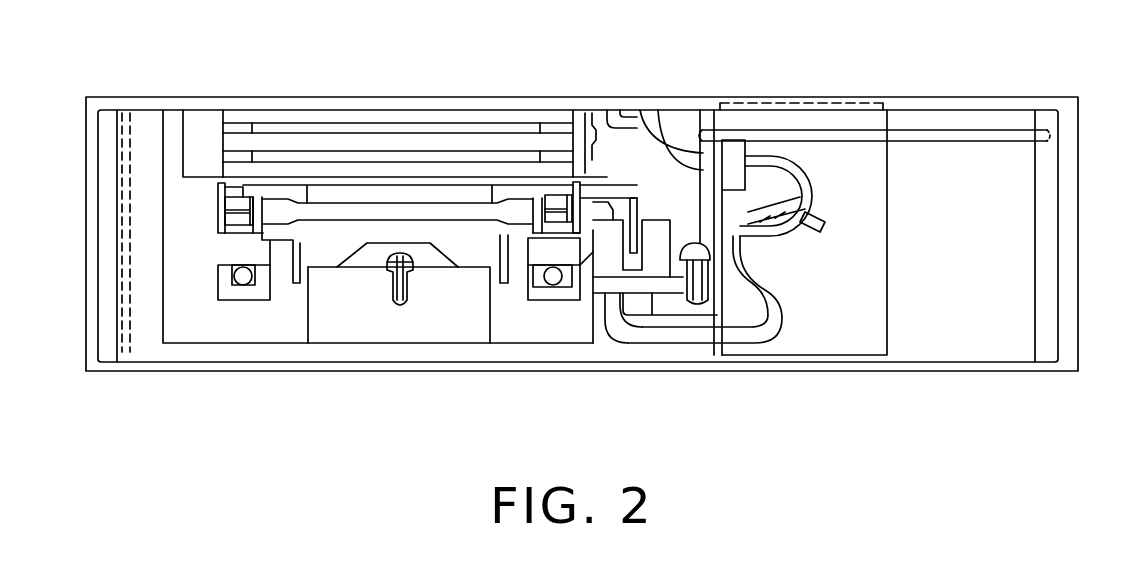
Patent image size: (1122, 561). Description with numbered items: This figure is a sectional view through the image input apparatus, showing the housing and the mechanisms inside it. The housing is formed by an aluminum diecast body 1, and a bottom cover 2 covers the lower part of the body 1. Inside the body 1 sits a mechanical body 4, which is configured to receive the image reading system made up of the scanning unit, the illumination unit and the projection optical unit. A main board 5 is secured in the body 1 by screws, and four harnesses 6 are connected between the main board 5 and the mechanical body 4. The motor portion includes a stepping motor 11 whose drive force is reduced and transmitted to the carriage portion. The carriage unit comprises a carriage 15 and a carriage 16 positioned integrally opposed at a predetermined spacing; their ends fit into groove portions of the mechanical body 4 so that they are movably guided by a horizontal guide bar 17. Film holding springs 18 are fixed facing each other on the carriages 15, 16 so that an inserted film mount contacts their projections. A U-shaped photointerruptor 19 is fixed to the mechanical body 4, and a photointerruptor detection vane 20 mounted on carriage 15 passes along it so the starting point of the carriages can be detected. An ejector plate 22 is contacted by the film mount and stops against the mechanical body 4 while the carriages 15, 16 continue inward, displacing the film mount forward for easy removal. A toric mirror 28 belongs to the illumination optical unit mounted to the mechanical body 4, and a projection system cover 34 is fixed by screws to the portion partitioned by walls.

The body 1 is at (1068, 137).
The bottom cover 2 is at (1005, 371).
The mechanical body 4 is at (145, 337).
The main board 5 is at (963, 130).
The harnesses 6 is at (748, 343).
The stepping motor 11 is at (855, 325).
The carriage 15 is at (228, 182).
The carriage 16 is at (233, 248).
The horizontal guide bar 17 is at (543, 400).
The film holding springs 18 is at (237, 218).
The photointerruptor 19 is at (660, 263).
The photointerruptor detection vane 20 is at (650, 210).
The ejector plate 22 is at (307, 275).
The toric mirror 28 is at (583, 122).
The projection system cover 34 is at (428, 257).